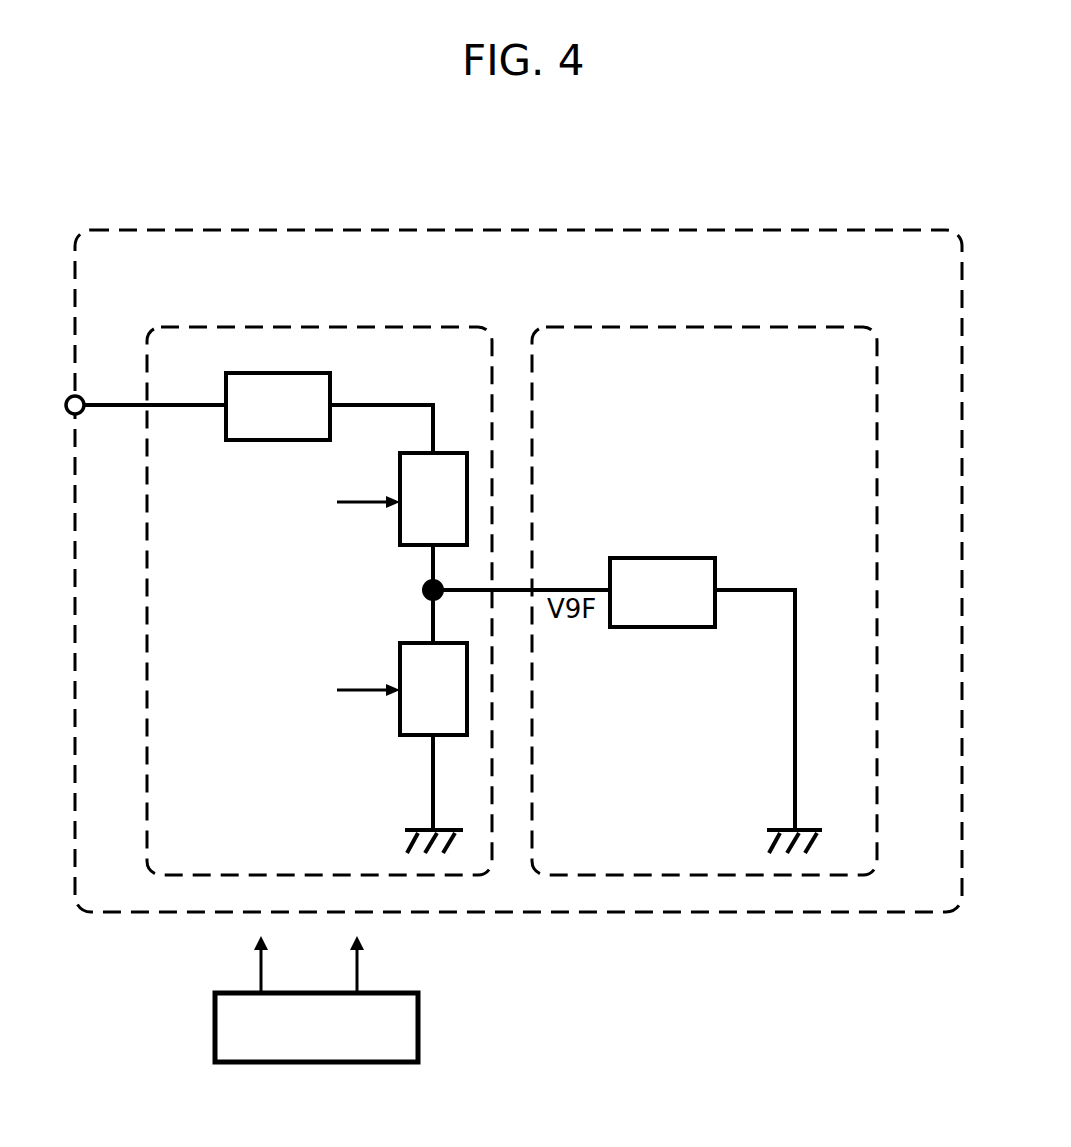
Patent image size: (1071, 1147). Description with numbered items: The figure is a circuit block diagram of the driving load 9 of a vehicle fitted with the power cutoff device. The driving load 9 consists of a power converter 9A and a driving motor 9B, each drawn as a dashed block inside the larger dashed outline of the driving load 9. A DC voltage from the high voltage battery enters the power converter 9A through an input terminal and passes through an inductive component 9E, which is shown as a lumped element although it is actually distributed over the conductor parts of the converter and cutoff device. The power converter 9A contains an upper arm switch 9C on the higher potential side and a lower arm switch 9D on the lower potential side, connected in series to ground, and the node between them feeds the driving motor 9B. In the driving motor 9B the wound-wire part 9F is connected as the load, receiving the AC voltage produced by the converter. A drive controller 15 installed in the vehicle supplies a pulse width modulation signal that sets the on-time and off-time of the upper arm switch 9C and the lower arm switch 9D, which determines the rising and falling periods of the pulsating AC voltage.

The driving load 9 is at (590, 230).
The power converter 9A is at (385, 327).
The driving motor 9B is at (795, 327).
The upper arm switch 9C is at (400, 535).
The lower arm switch 9D is at (400, 730).
The inductive component 9E is at (243, 440).
The wound-wire part 9F is at (655, 558).
The drive controller 15 is at (418, 1007).